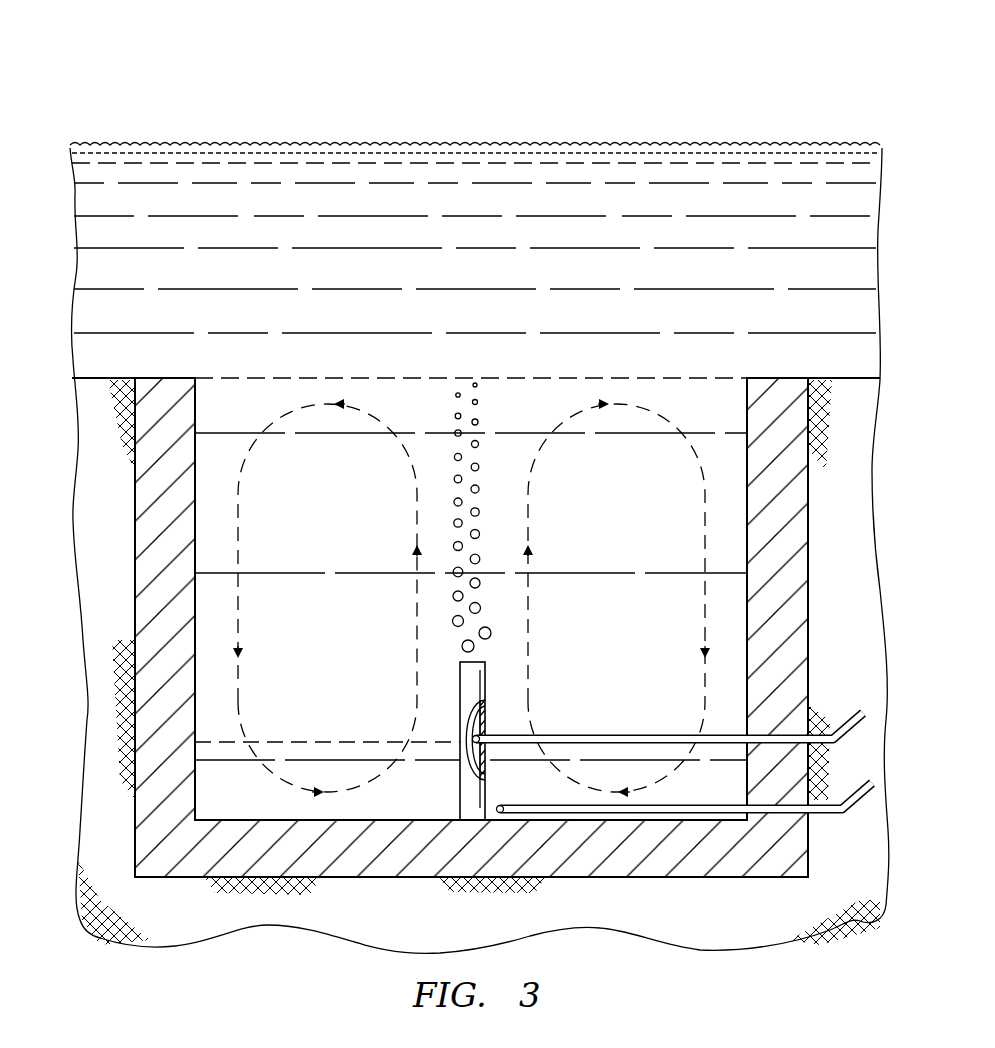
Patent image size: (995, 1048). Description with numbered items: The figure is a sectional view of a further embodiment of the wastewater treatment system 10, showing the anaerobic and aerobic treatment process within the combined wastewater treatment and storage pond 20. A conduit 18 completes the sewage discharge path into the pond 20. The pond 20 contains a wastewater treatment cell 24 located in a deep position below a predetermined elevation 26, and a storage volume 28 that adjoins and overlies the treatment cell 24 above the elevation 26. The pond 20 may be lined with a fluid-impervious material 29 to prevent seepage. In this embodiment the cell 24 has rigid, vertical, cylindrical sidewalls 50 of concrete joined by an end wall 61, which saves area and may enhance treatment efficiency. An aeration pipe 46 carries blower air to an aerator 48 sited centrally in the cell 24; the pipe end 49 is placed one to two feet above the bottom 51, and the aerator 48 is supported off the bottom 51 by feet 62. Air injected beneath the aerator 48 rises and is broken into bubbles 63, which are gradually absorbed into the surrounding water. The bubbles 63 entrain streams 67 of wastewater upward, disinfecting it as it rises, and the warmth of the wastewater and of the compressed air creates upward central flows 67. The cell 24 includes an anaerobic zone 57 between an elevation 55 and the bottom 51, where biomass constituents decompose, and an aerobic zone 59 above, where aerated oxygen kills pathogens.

The wastewater treatment system 10 is at (596, 62).
The conduit 18 is at (840, 814).
The combined wastewater treatment and storage pond 20 is at (480, 135).
The wastewater treatment cell 24 is at (631, 554).
The predetermined elevation 26 is at (517, 376).
The storage volume 28 is at (595, 279).
The fluid-impervious material 29 is at (837, 380).
The aeration pipe 46 is at (842, 718).
The aerator 48 is at (485, 668).
The end of the aeration pipe 49 is at (472, 740).
The rigid sidewalls 50 is at (133, 582).
The bottom of the treatment cell 51 is at (433, 818).
The elevation 55 is at (292, 741).
The anaerobic zone 57 is at (240, 797).
The aerobic zone 59 is at (345, 554).
The end wall 61 is at (731, 878).
The feet 62 is at (460, 768).
The bubbles 63 is at (480, 512).
The upward central wastewater flows 67 is at (416, 597).